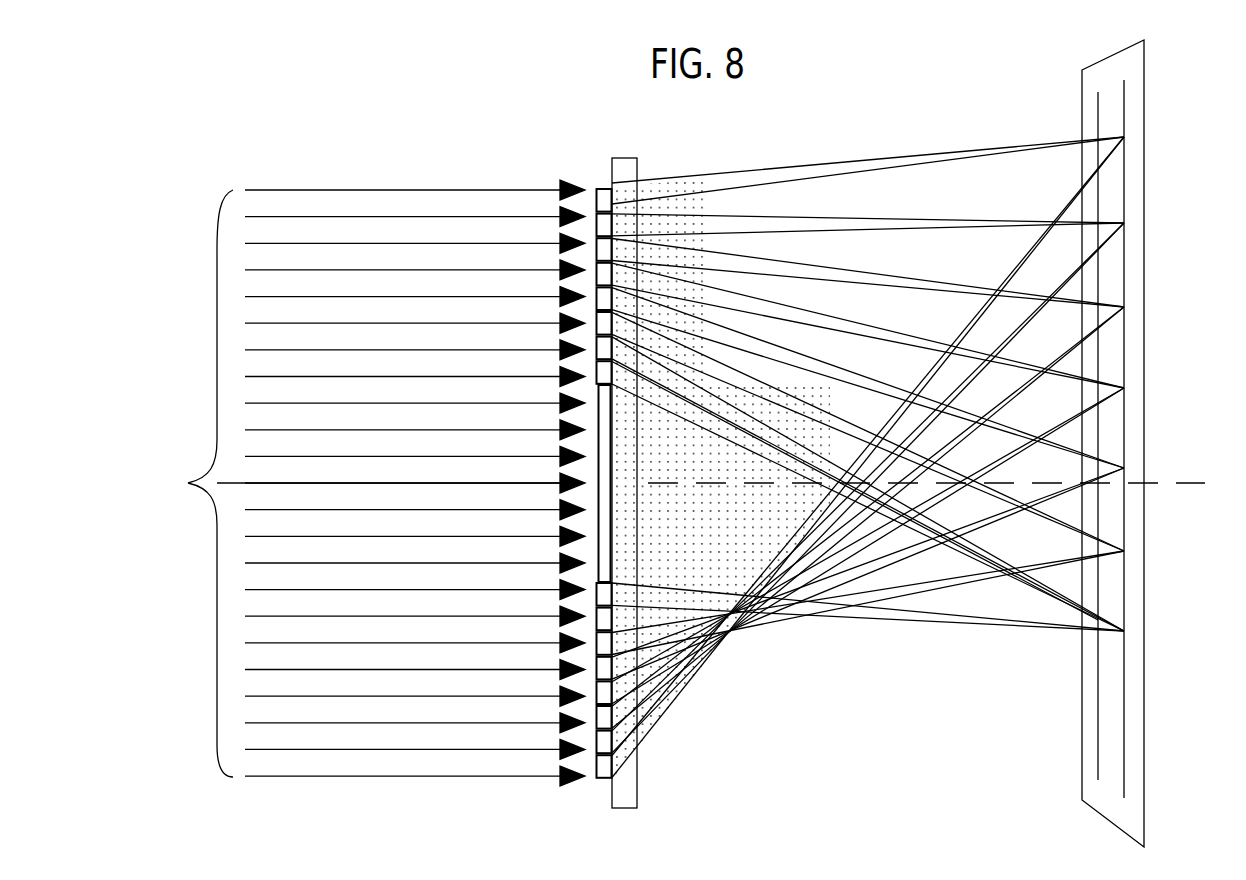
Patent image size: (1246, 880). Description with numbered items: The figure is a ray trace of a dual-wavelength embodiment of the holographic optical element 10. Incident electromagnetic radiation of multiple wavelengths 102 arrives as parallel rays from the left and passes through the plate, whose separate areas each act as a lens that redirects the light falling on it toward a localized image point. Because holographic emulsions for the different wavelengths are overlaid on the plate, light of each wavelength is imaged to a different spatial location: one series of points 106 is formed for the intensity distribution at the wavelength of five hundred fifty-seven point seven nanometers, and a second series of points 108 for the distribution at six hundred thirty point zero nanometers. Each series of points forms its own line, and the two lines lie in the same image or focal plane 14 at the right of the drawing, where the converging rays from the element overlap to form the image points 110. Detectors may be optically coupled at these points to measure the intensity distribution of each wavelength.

The incident electromagnetic radiation of multiple wavelengths 102 is at (188, 483).
The holographic optical element 10 is at (623, 790).
The image or focal plane 14 is at (1145, 785).
The line of points for wavelength 630.0 nm 108 is at (1098, 102).
The line of points for wavelength 557.7 nm 106 is at (1124, 104).
The focal spots 110 is at (1124, 137).